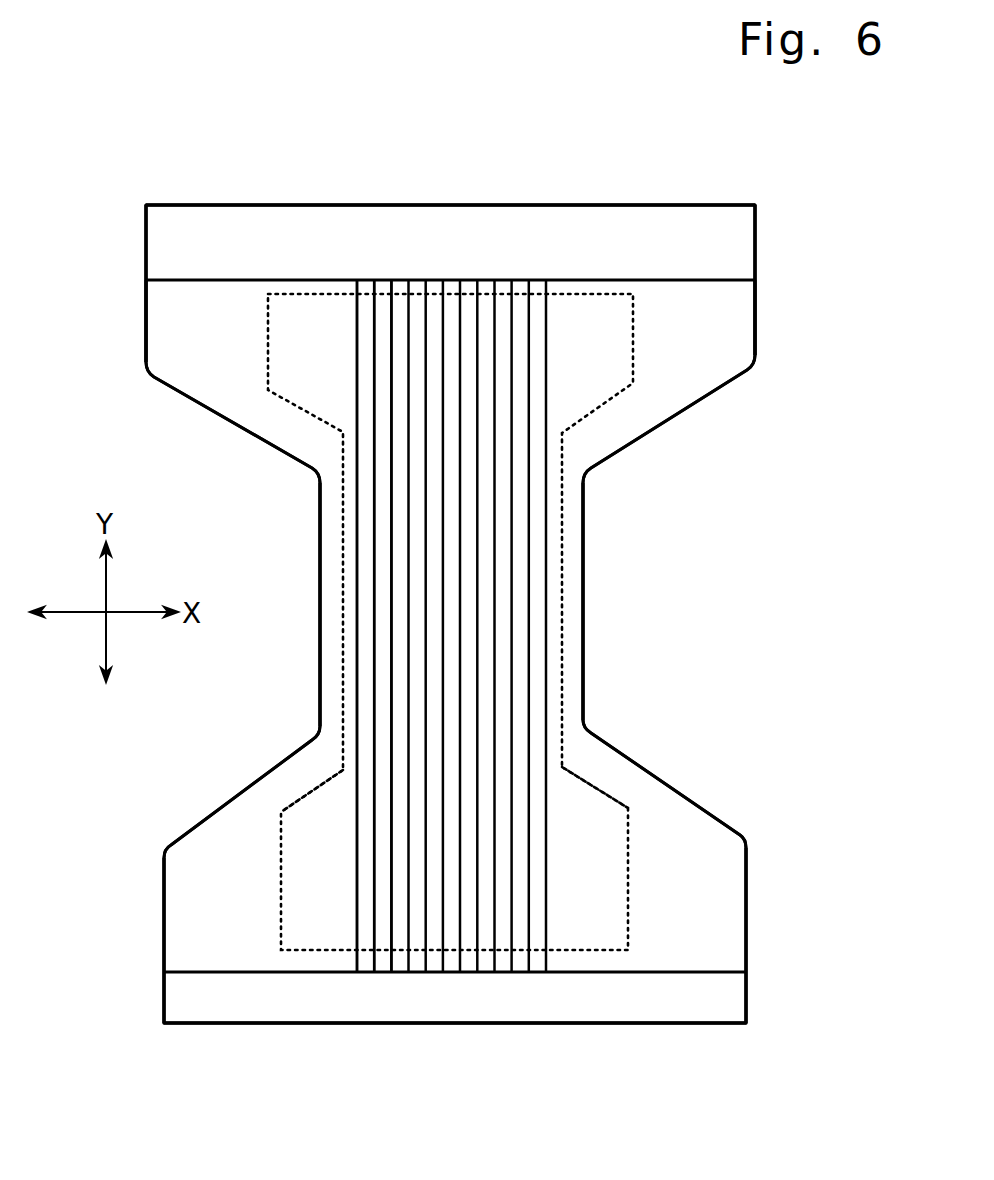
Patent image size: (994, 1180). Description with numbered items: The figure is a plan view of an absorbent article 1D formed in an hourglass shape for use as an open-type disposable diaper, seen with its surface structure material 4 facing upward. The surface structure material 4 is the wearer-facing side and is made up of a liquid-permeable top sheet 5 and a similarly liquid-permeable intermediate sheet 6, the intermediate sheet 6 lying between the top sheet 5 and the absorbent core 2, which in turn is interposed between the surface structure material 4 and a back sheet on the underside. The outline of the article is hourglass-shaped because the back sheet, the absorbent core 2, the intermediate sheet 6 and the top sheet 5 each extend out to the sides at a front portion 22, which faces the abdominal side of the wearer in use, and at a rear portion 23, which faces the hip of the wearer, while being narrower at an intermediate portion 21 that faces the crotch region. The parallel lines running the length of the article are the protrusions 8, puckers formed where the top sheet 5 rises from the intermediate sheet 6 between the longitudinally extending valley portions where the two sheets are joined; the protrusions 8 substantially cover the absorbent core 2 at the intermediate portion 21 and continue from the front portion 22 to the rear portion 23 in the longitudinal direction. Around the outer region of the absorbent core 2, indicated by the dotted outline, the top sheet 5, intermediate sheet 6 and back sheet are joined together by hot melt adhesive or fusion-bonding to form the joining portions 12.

The absorbent article 1D is at (683, 517).
The absorbent core 2 is at (450, 576).
The surface structure material 4 is at (437, 622).
The top sheet 5 is at (160, 325).
The intermediate sheet 6 is at (157, 242).
The protrusions 8 is at (363, 315).
The joining portions 12 is at (265, 800).
The intermediate portion 21 is at (592, 655).
The front portion 22 is at (762, 332).
The rear portion 23 is at (752, 912).